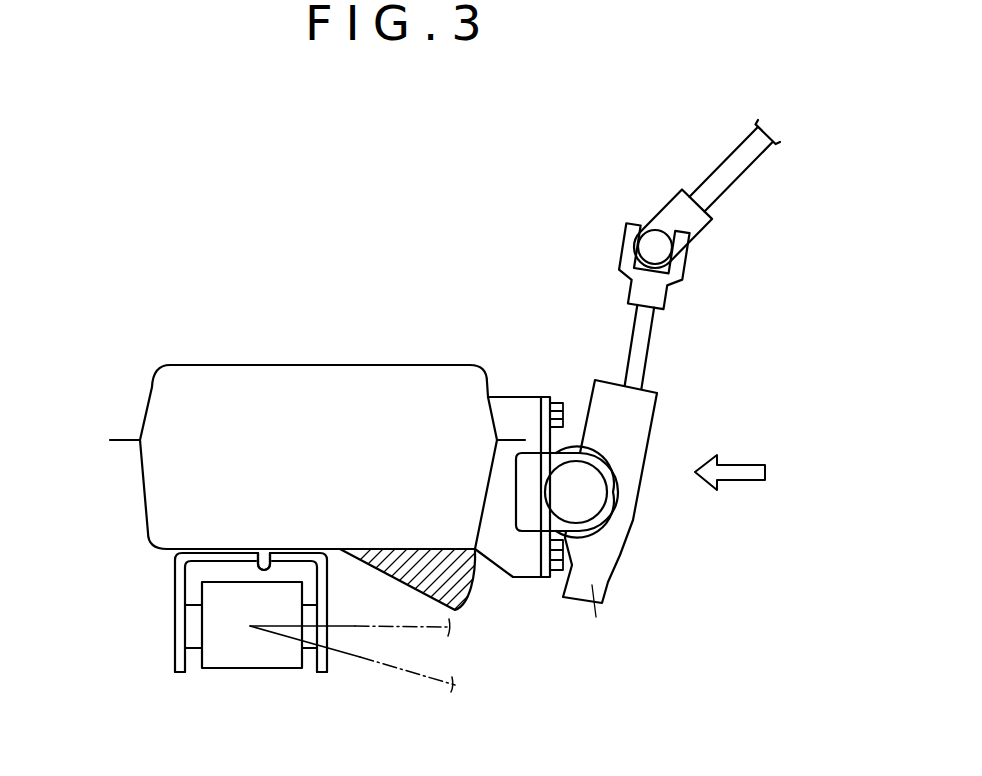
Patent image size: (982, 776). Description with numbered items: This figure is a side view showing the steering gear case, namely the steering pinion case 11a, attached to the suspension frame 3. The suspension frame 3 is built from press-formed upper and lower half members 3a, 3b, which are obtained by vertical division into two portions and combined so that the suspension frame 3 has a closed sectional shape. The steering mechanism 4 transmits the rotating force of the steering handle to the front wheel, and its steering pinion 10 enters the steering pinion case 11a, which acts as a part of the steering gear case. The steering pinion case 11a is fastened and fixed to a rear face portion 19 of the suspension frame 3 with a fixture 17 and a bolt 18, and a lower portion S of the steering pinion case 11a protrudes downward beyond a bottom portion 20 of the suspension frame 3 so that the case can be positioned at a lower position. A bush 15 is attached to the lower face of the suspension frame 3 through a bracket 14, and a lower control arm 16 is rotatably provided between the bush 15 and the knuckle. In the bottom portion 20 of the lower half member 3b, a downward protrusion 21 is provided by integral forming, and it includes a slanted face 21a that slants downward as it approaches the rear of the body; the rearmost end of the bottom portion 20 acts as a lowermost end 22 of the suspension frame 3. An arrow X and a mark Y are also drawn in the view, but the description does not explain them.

The suspension frame 3 is at (299, 423).
The upper half member 3a is at (158, 388).
The lower half member 3b is at (158, 506).
The steering mechanism 4 is at (722, 246).
The steering pinion 10 is at (640, 353).
The steering pinion case 11a is at (645, 421).
The bracket 14 is at (175, 592).
The bush 15 is at (254, 655).
The lower control arm 16 is at (398, 668).
The fixture 17 is at (615, 512).
The bolt 18 is at (562, 410).
The rear face portion 19 is at (496, 466).
The bottom portion 20 is at (259, 562).
The downward protrusion 21 is at (448, 575).
The slanted face 21a is at (373, 568).
The lowermost end 22 is at (458, 614).
The lower portion S is at (597, 620).
The direction X is at (746, 474).
The angle Y is at (440, 560).